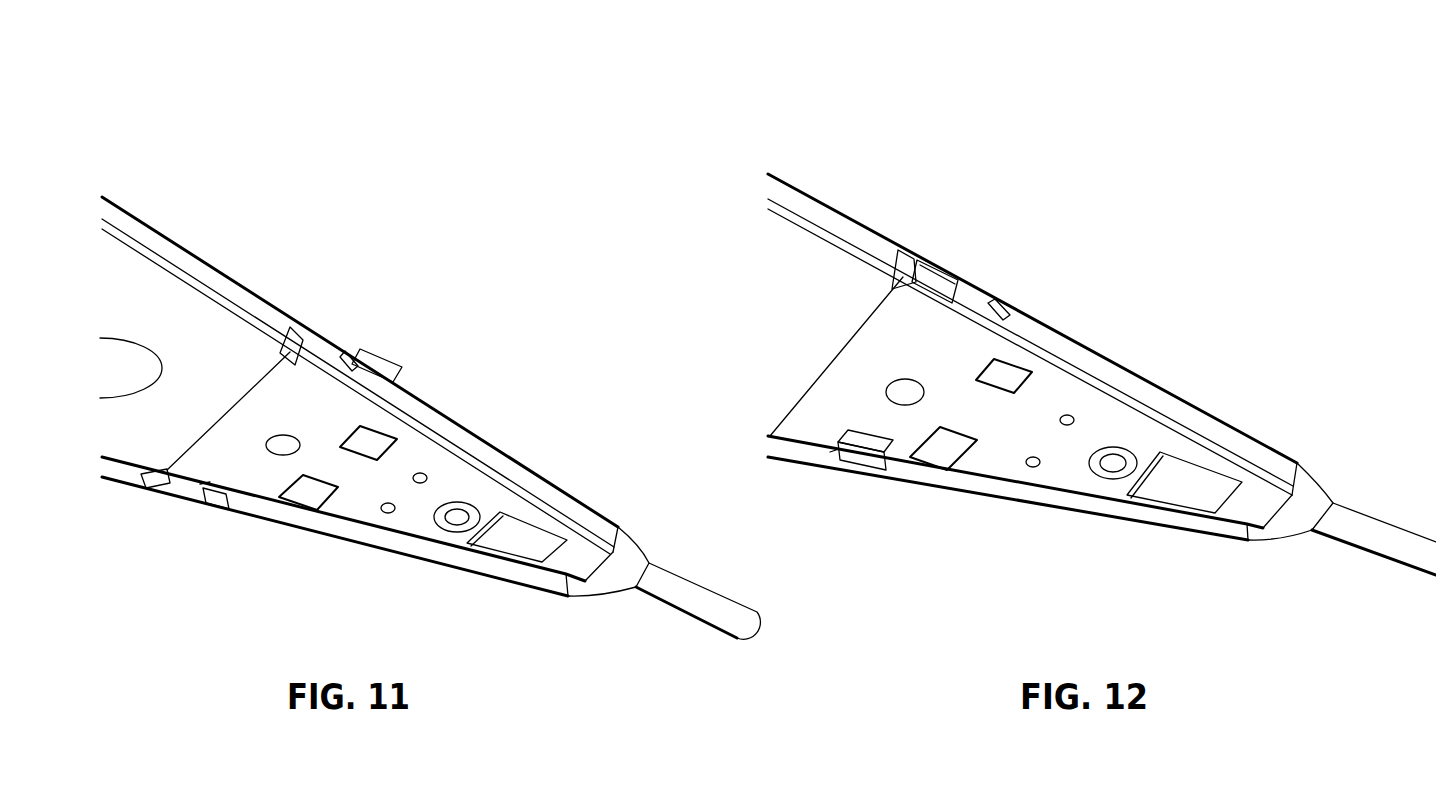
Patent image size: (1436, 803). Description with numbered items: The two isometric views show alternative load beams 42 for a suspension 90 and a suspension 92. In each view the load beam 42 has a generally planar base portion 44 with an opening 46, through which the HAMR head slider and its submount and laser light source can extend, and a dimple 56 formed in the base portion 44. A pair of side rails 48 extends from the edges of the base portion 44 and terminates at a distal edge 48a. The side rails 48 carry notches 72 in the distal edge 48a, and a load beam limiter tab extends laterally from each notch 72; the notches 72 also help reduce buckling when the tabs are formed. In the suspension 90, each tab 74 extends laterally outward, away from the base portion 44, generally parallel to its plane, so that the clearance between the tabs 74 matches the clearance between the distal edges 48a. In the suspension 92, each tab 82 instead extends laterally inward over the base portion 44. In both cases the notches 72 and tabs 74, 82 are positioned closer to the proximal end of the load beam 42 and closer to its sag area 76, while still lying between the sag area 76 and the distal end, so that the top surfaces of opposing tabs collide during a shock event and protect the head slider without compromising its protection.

In FIG. 11, the load beam 42 is at (221, 270).
In FIG. 12, the load beam 42 is at (862, 220).
In FIG. 11, the base portion 44 is at (336, 425).
In FIG. 12, the base portion 44 is at (968, 373).
In FIG. 11, the opening 46 is at (495, 516).
In FIG. 12, the opening 46 is at (1156, 456).
In FIG. 11, the side rails 48 is at (448, 432).
In FIG. 12, the side rails 48 is at (1103, 365).
In FIG. 11, the distal edge 48a is at (275, 313).
In FIG. 12, the distal edge 48a is at (923, 260).
In FIG. 11, the dimple 56 is at (437, 510).
In FIG. 12, the dimple 56 is at (1090, 460).
In FIG. 11, the notch 72 is at (340, 360).
In FIG. 12, the notch 72 is at (1012, 313).
In FIG. 11, the tab 74 is at (387, 355).
In FIG. 11, the sag area 76 is at (258, 400).
In FIG. 12, the sag area 76 is at (868, 350).
In FIG. 12, the tab 82 is at (962, 302).
In FIG. 11, the suspension 90 is at (484, 301).
In FIG. 12, the suspension 92 is at (1141, 242).